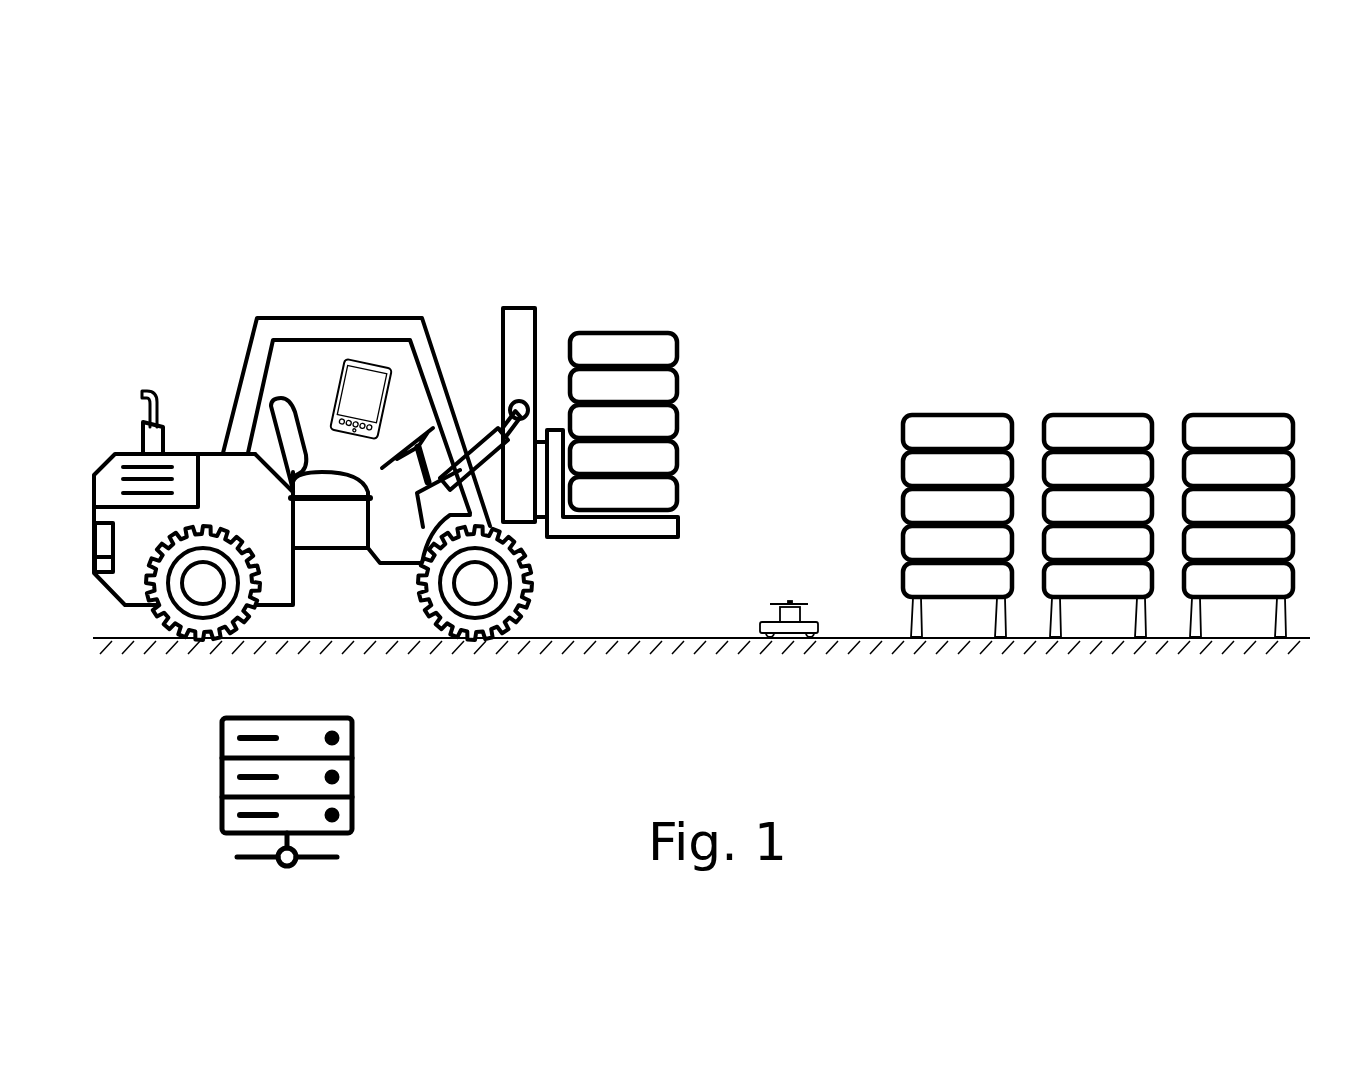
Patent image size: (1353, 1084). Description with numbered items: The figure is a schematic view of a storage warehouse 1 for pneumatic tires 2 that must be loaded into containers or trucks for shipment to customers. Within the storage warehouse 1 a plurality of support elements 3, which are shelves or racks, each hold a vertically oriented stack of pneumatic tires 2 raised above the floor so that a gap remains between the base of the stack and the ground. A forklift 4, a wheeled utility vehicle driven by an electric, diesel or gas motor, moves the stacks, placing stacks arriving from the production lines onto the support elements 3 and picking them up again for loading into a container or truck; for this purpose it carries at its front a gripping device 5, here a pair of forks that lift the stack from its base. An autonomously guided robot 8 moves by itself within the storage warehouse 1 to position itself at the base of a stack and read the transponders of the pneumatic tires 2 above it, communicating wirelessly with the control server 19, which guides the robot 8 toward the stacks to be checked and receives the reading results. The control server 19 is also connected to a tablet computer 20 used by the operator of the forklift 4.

The storage warehouse 1 is at (1148, 190).
The pneumatic tires 2 is at (655, 390).
The support elements 3 is at (952, 626).
The forklift 4 is at (386, 448).
The gripping device 5 is at (600, 556).
The autonomously guided robot 8 is at (792, 580).
The control server 19 is at (298, 781).
The tablet computer 20 is at (358, 390).